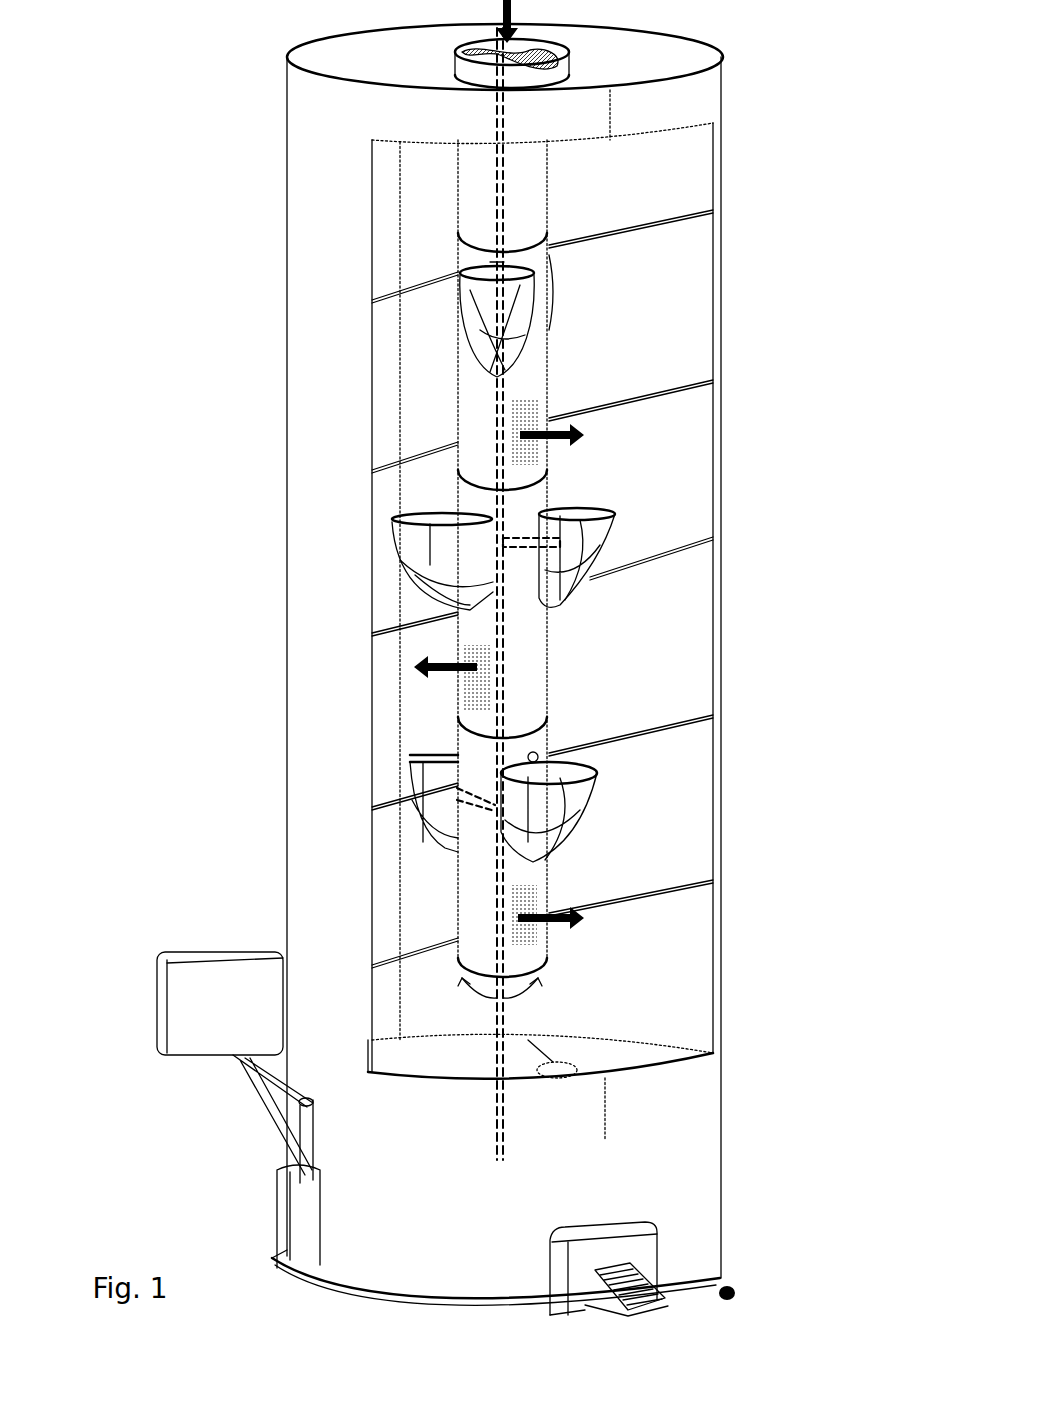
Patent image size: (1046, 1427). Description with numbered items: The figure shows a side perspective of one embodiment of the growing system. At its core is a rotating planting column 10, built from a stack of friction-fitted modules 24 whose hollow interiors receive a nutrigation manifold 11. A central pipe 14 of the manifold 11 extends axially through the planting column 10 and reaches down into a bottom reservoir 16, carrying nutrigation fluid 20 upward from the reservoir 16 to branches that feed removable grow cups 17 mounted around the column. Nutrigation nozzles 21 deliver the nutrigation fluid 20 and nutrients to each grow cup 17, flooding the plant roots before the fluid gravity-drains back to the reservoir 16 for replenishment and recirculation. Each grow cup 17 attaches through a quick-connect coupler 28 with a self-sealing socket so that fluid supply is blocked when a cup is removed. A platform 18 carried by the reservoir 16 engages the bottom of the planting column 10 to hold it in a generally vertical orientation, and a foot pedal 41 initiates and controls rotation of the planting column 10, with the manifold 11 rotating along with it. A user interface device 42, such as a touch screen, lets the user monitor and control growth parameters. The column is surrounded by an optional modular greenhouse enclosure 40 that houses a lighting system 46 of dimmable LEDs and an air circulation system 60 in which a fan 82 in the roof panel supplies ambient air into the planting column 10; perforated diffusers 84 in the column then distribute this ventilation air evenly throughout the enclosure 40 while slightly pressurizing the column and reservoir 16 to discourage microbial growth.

The planting column 10 is at (475, 470).
The nutrigation manifold 11 is at (497, 870).
The central pipe 14 is at (495, 636).
The reservoir 16 is at (575, 1180).
The grow cup 17 is at (485, 312).
The platform 18 is at (600, 1057).
The nutrigation fluid 20 is at (577, 543).
The nutrigation nozzle 21 is at (522, 537).
The module 24 is at (483, 417).
The coupler 28 is at (495, 808).
The modular greenhouse enclosure 40 is at (320, 137).
The foot pedal 41 is at (647, 1282).
The user interface device 42 is at (228, 998).
The lighting system 46 is at (623, 232).
The air circulation system 60 is at (535, 47).
The fan 82 is at (463, 53).
The perforated diffuser 84 is at (523, 420).